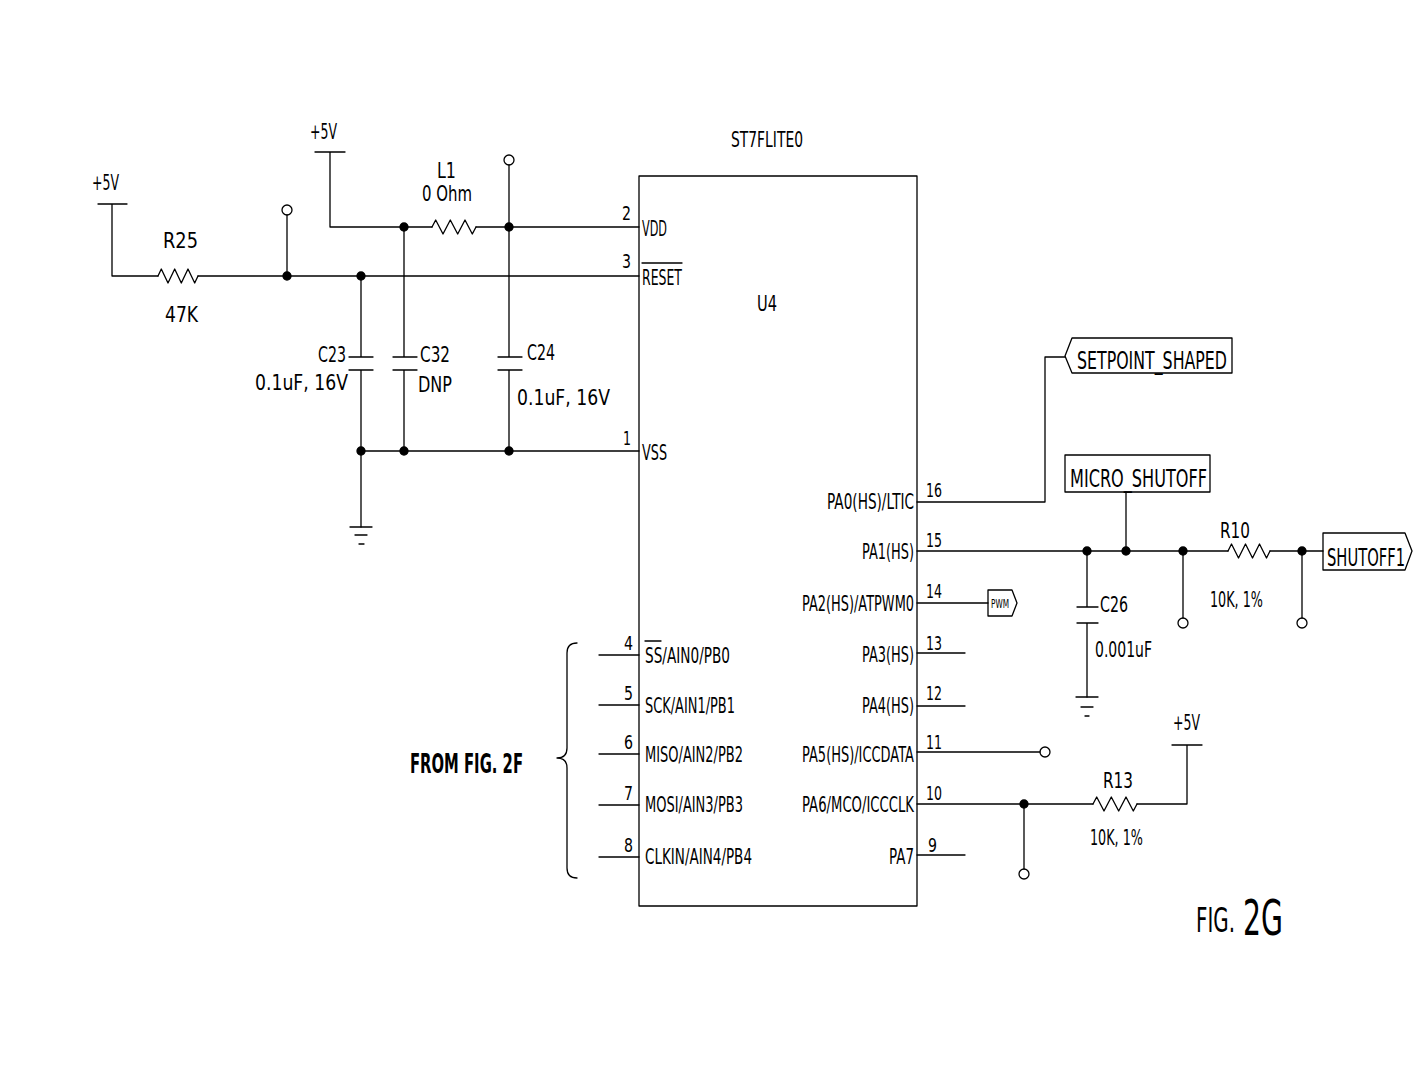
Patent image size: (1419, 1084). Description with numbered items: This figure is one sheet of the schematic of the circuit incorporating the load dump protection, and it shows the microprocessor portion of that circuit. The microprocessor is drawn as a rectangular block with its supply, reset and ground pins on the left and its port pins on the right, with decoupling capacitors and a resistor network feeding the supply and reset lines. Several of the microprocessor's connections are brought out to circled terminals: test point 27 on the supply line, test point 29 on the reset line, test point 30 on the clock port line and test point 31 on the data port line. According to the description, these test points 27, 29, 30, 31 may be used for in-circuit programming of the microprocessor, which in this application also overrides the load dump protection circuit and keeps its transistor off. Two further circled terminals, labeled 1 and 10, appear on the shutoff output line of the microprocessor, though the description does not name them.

The test point 27 is at (509, 173).
The test point 29 is at (287, 226).
The test point 30 is at (1025, 860).
The test point 31 is at (996, 755).
The connector terminal on PA1(HS) line 1 is at (1183, 607).
The connector terminal at SHUTOFF1 net 10 is at (1304, 610).